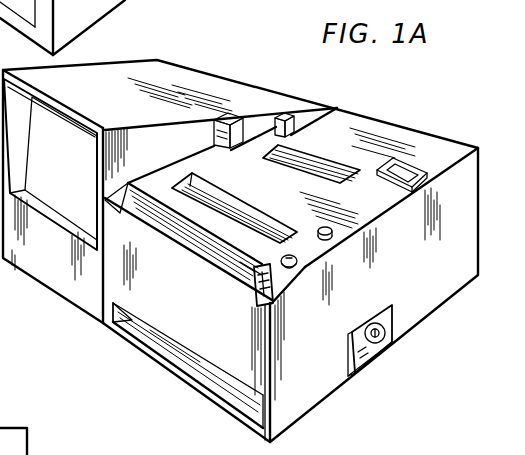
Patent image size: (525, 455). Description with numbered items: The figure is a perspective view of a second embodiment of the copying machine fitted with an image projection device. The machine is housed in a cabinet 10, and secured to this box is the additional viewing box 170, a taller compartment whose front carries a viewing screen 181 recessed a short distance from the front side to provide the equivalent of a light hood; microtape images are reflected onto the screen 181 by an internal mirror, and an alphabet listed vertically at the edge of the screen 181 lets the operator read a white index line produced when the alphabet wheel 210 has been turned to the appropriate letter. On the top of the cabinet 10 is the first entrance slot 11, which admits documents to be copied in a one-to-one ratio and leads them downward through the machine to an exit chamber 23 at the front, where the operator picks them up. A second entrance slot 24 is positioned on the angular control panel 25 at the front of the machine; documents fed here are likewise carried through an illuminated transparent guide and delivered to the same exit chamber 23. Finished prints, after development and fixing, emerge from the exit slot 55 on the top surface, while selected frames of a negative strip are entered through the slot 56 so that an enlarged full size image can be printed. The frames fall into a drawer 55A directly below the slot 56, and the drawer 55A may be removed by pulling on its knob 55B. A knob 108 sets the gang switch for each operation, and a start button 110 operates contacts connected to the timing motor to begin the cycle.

The cabinet 10 is at (427, 134).
The viewing box 170 is at (198, 78).
The viewing screen 181 is at (66, 160).
The first entrance slot 11 is at (259, 216).
The second entrance slot 24 is at (175, 238).
The wheel 210 is at (270, 266).
The angular control panel 25 is at (250, 292).
The exit chamber 23 is at (155, 360).
The exit slot 55 is at (335, 149).
The slot 56 is at (402, 180).
The knob 108 is at (298, 262).
The start button 110 is at (333, 237).
The drawer 55A is at (388, 305).
The knob 55B is at (378, 344).